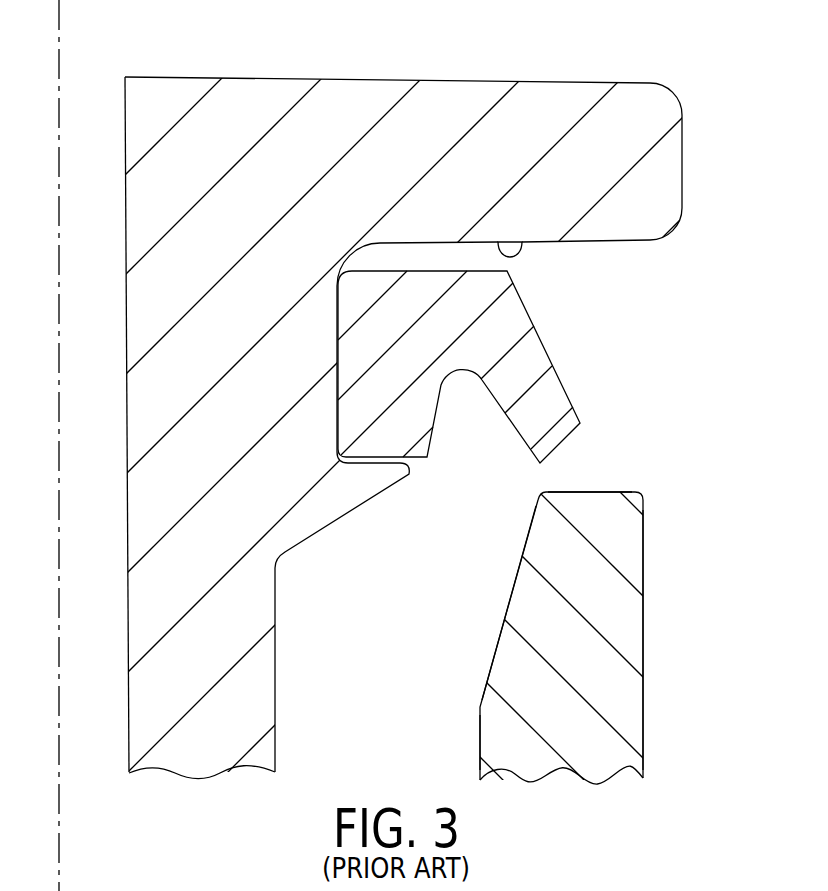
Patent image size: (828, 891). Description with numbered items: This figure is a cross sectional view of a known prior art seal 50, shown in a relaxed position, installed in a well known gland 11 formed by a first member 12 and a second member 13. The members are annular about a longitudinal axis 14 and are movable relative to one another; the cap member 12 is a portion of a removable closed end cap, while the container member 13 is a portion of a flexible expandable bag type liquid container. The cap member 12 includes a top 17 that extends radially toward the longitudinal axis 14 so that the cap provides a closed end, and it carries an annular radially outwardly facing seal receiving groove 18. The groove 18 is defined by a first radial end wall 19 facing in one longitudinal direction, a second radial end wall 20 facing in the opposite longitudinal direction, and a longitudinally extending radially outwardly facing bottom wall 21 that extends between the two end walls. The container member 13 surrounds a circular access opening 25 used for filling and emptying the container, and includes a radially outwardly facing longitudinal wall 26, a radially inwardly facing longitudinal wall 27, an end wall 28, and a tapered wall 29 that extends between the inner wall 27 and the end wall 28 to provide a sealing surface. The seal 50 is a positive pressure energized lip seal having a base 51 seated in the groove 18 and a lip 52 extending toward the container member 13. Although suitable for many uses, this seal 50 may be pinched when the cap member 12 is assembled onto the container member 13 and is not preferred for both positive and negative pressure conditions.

The gland 11 is at (283, 79).
The first member 12 is at (355, 121).
The second member 13 is at (608, 676).
The longitudinal axis 14 is at (59, 50).
The top 17 is at (547, 108).
The seal receiving groove 18 is at (393, 257).
The first radial end wall 19 is at (518, 241).
The second radial end wall 20 is at (356, 455).
The bottom wall 21 is at (360, 345).
The access opening 25 is at (390, 759).
The radially outwardly facing longitudinal wall 26 is at (645, 633).
The radially inwardly facing longitudinal wall 27 is at (480, 718).
The end wall 28 is at (602, 492).
The tapered wall 29 is at (508, 590).
The seal 50 is at (512, 277).
The base 51 is at (383, 412).
The lip 52 is at (553, 423).